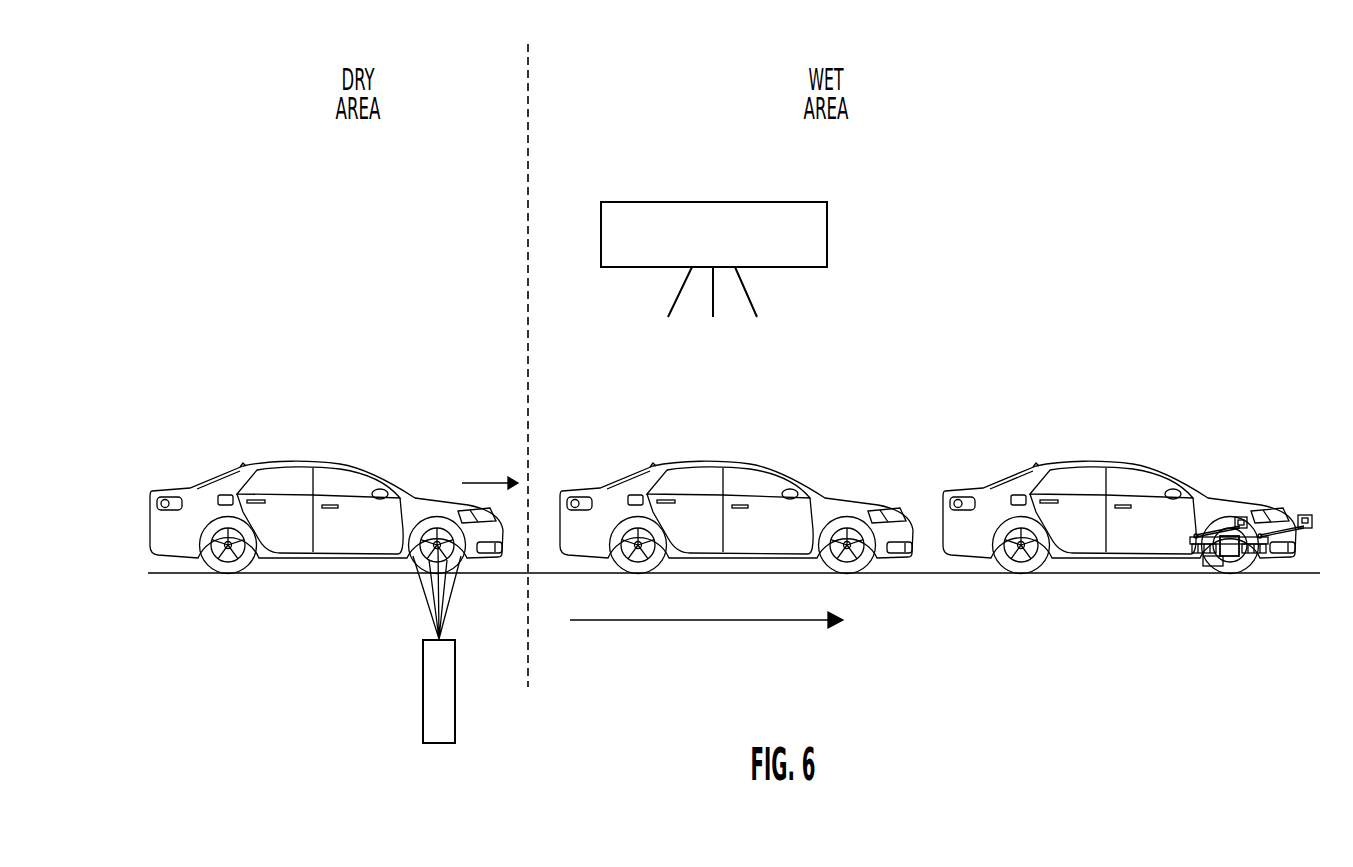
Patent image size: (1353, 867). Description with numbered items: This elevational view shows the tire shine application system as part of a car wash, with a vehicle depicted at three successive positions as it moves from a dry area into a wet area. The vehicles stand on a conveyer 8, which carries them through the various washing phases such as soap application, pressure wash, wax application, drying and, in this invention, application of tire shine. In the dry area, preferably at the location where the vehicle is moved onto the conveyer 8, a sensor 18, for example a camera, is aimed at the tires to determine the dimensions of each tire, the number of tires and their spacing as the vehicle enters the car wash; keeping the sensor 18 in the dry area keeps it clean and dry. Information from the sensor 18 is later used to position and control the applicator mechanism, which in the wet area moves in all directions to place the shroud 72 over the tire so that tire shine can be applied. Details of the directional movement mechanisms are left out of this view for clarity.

The conveyer 8 is at (1100, 576).
The sensor 18 is at (456, 698).
The shroud 72 is at (1238, 576).